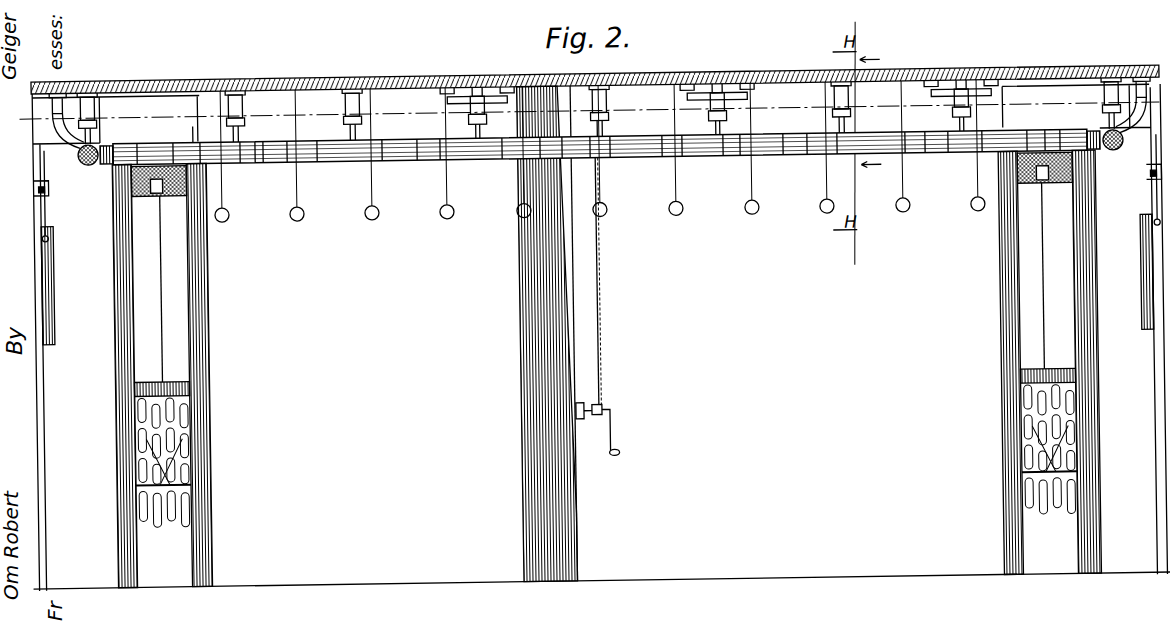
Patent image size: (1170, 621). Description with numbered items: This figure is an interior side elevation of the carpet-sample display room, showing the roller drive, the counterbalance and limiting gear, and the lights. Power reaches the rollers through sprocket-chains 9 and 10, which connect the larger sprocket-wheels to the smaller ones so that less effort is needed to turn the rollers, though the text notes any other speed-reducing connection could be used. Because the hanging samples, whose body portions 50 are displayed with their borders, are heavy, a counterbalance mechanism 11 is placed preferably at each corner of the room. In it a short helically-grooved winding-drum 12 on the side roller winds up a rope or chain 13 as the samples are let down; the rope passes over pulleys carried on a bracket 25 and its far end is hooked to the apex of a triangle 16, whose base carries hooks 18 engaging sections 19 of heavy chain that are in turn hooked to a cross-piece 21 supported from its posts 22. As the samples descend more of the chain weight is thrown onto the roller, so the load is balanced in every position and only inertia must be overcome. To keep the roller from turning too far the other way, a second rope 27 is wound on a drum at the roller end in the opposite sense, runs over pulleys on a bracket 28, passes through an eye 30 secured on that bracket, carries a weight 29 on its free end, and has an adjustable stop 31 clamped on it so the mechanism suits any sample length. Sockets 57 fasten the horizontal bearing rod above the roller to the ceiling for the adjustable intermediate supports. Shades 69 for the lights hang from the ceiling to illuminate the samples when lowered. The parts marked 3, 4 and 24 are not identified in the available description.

The crank handle 3 is at (614, 461).
The central post 4 is at (518, 388).
The sprocket-chain 9 is at (596, 302).
The sprocket-chain 10 is at (600, 166).
The counterbalance mechanism 11 is at (193, 128).
The helically-grooved winding-drum 12 is at (107, 148).
The rope or chain 13 is at (1042, 311).
The triangle 16 is at (193, 456).
The hook 18 is at (160, 325).
The section of heavy chain 19 is at (176, 524).
The cross-piece 21 is at (169, 383).
The post 22 is at (183, 276).
The pin 24 is at (156, 188).
The bracket 25 is at (156, 193).
The rope 27 is at (47, 210).
The bracket 28 is at (38, 126).
The weight 29 is at (51, 261).
The eye 30 is at (48, 185).
The stop 31 is at (46, 191).
The body portion 50 is at (297, 168).
The socket 57 is at (257, 167).
The shade for lights 69 is at (819, 219).